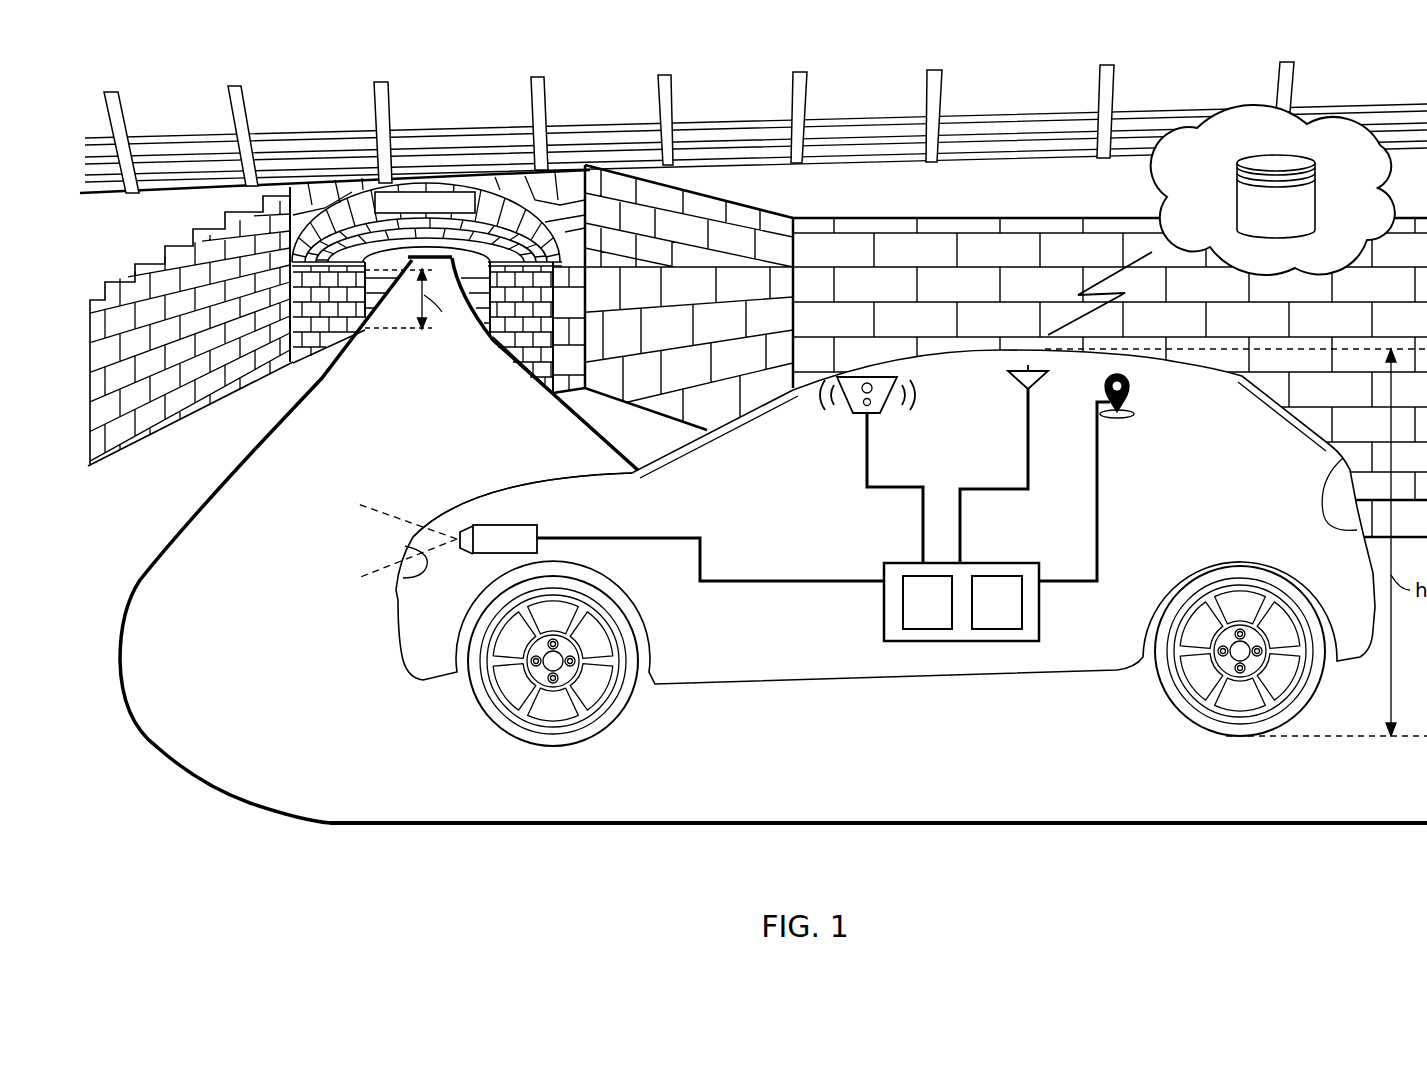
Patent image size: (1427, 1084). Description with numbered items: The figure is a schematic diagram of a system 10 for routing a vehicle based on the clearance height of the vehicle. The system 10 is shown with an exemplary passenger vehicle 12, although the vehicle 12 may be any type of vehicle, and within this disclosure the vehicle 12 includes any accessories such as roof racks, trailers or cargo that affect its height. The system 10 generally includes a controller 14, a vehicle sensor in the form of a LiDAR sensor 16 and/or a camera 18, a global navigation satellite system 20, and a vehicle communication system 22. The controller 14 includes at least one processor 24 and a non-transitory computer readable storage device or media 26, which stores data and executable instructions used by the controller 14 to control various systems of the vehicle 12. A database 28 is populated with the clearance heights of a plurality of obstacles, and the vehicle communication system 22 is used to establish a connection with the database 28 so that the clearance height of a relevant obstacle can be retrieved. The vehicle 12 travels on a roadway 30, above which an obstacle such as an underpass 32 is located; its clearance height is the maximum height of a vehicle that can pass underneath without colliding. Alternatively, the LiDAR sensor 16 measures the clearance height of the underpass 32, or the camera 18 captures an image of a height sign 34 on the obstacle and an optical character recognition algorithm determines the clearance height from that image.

The system 10 is at (1205, 484).
The vehicle 12 is at (559, 484).
The controller 14 is at (1039, 640).
The LiDAR sensor 16 is at (853, 412).
The camera 18 is at (493, 551).
The global navigation satellite system (GNSS) 20 is at (1136, 412).
The vehicle communication system 22 is at (1008, 378).
The processor 24 is at (915, 613).
The non-transitory computer readable storage device or media 26 is at (985, 613).
The database 28 is at (1264, 218).
The roadway 30 is at (410, 384).
The underpass 32 is at (522, 312).
The height sign 34 is at (378, 198).